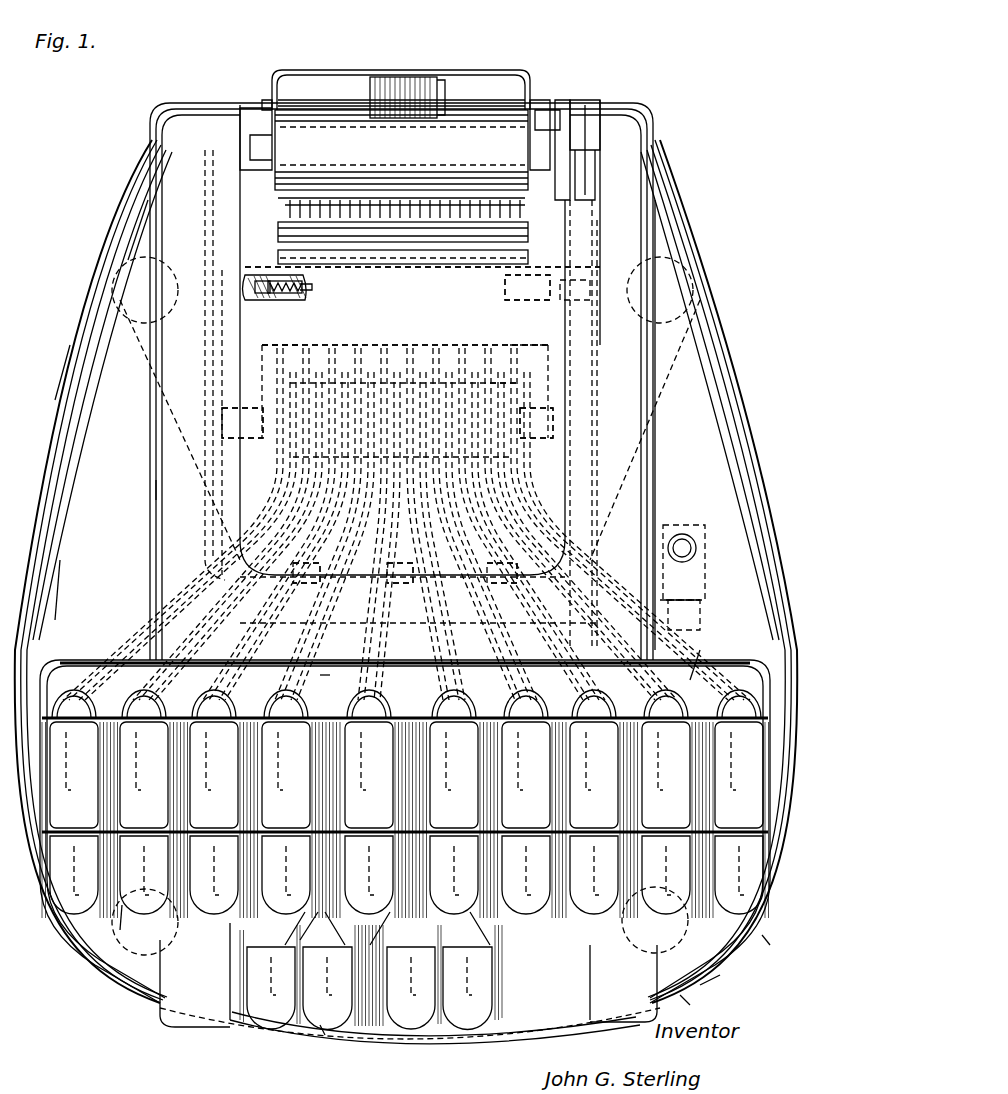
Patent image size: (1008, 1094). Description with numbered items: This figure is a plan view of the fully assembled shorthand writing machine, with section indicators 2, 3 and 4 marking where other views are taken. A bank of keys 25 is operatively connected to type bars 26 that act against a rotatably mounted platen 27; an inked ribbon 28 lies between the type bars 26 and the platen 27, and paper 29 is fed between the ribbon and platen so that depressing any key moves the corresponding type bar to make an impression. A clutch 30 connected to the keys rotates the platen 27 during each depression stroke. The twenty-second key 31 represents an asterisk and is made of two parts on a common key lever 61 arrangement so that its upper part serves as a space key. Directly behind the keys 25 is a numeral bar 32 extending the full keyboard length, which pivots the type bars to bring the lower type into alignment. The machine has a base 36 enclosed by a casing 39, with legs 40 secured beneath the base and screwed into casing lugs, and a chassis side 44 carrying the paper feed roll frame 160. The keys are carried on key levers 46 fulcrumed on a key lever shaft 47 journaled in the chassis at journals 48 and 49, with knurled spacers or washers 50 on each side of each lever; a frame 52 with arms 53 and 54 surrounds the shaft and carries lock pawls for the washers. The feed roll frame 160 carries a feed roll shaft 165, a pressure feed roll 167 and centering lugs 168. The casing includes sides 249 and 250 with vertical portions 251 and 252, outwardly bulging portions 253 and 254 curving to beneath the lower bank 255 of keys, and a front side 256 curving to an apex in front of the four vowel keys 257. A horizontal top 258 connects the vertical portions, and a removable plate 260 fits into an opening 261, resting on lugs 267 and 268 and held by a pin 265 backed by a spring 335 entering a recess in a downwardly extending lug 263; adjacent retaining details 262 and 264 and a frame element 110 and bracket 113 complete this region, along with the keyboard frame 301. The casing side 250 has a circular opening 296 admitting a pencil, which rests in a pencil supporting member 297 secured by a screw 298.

The section line 2- 2 is at (193, 80).
The section line 3- 3 is at (624, 80).
The section line 4- 4 is at (404, 112).
The keys 25 is at (125, 903).
The type bars 26 is at (440, 186).
The platen 27 is at (497, 110).
The inked ribbon 28 is at (393, 186).
The paper 29 is at (333, 186).
The clutch 30 is at (590, 105).
The asterisk key 31 is at (392, 928).
The numeral bar 32 is at (722, 663).
The base 36 is at (130, 222).
The casing 39 is at (143, 165).
The legs 40 is at (112, 282).
The side of chassis 44 is at (247, 118).
The key levers 46 is at (255, 530).
The key lever shaft 47 is at (262, 440).
The journal 48 is at (567, 420).
The journal 49 is at (258, 437).
The spacers or washers 50 is at (508, 460).
The frame 52 is at (398, 338).
The arm 53 is at (248, 357).
The arm 54 is at (562, 353).
The key lever 61 is at (335, 915).
The base shell 110 is at (718, 975).
The carriage bracket 113 is at (556, 118).
The paper feed roll frame 160 is at (322, 58).
The feed roll shaft 165 is at (468, 98).
The pressure feed roll 167 is at (425, 78).
The lug 168 is at (385, 77).
The side of casing 249 is at (70, 345).
The side of casing 250 is at (720, 338).
The vertical portion 251 is at (157, 487).
The vertical portion 252 is at (660, 440).
The bulging portion 253 is at (713, 488).
The bulging portion 254 is at (84, 590).
The lower bank of keys 255 is at (762, 935).
The front side 256 is at (682, 995).
The vowel keys 257 is at (322, 1028).
The top 258 is at (289, 685).
The removable plate 260 is at (432, 306).
The opening 261 is at (565, 318).
The frame lug 262 is at (425, 592).
The lug 263 is at (240, 278).
The spring plunger 264 is at (245, 292).
The pin 265 is at (305, 290).
The lug 267 is at (292, 648).
The lug 268 is at (520, 595).
The circular opening 296 is at (684, 538).
The pencil supporting member 297 is at (702, 560).
The screw 298 is at (706, 605).
The keyboard frame 301 is at (90, 682).
The spring 335 is at (300, 302).